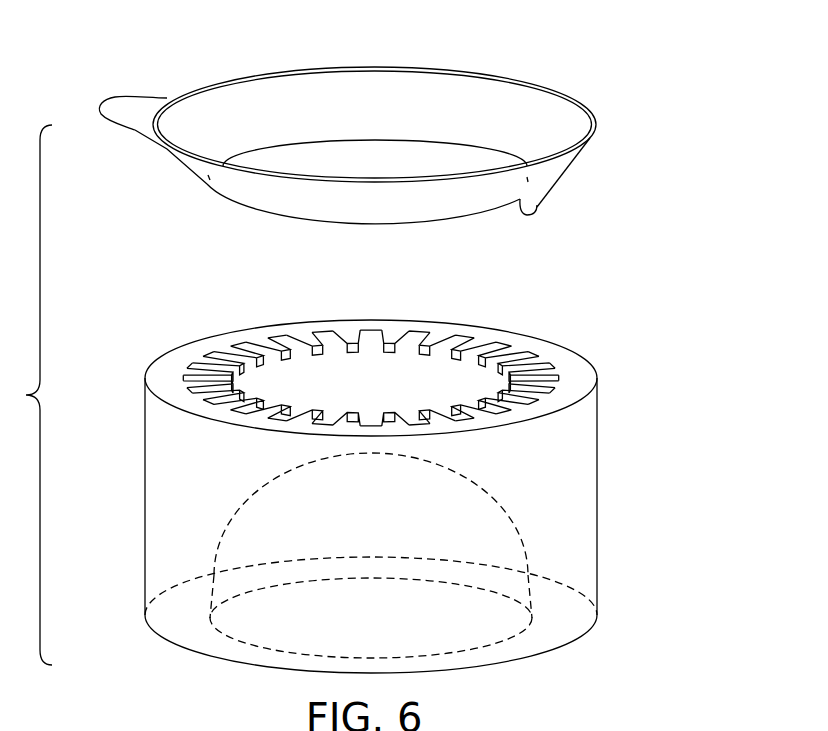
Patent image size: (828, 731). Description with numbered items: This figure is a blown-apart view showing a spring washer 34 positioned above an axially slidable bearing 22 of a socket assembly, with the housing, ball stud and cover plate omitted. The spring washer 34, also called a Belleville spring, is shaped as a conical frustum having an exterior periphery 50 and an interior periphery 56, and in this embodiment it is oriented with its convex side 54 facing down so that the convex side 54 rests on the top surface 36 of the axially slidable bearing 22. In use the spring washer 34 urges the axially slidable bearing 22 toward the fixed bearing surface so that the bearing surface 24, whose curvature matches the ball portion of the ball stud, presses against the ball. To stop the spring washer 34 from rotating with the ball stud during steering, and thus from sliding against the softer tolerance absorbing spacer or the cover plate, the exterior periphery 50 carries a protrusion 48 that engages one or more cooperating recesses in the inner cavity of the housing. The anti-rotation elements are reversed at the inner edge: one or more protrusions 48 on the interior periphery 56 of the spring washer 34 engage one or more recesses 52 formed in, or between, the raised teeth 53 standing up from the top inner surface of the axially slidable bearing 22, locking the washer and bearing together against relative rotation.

The axially slidable bearing 22 is at (397, 486).
The bearing surface 24 is at (523, 557).
The spring washer 34 is at (394, 156).
The top surface 36 is at (568, 362).
The protrusion 48 is at (133, 133).
The exterior periphery 50 is at (500, 80).
The recess 52 is at (316, 457).
The raised teeth 53 is at (255, 403).
The convex side 54 is at (383, 210).
The interior periphery 56 is at (347, 143).